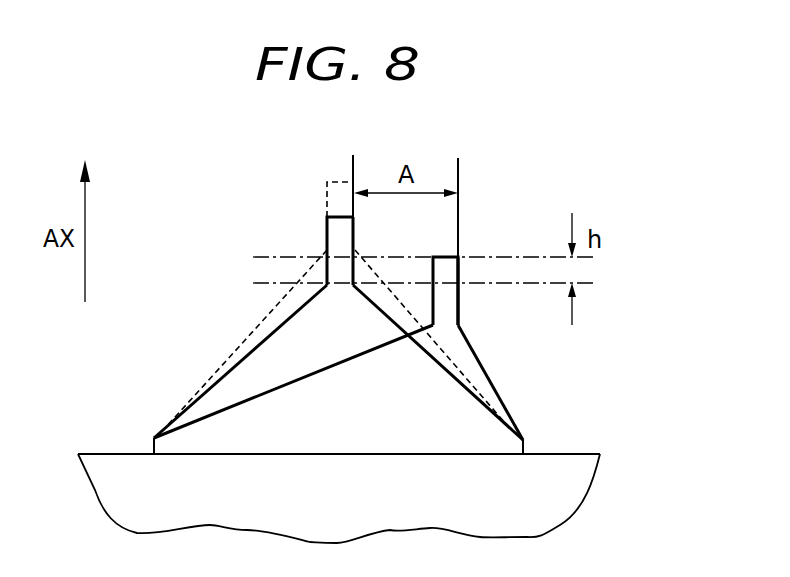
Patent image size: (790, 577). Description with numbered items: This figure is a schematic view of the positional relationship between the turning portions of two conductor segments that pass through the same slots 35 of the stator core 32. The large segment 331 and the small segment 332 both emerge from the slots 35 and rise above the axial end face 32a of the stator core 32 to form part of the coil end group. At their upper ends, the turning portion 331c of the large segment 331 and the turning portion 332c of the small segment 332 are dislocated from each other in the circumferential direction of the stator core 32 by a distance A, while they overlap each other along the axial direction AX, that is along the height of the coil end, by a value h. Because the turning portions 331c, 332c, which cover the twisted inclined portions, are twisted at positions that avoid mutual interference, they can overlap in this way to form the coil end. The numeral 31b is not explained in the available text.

The large segment 331 is at (258, 334).
The turning portion of the large segment 331c is at (354, 237).
The shaft portion 31b is at (473, 238).
The small segment 332 is at (490, 366).
The turning portion of the small segment 332c is at (458, 297).
The slots 35 is at (152, 448).
The axial end face 32a is at (582, 452).
The stator core 32 is at (560, 490).